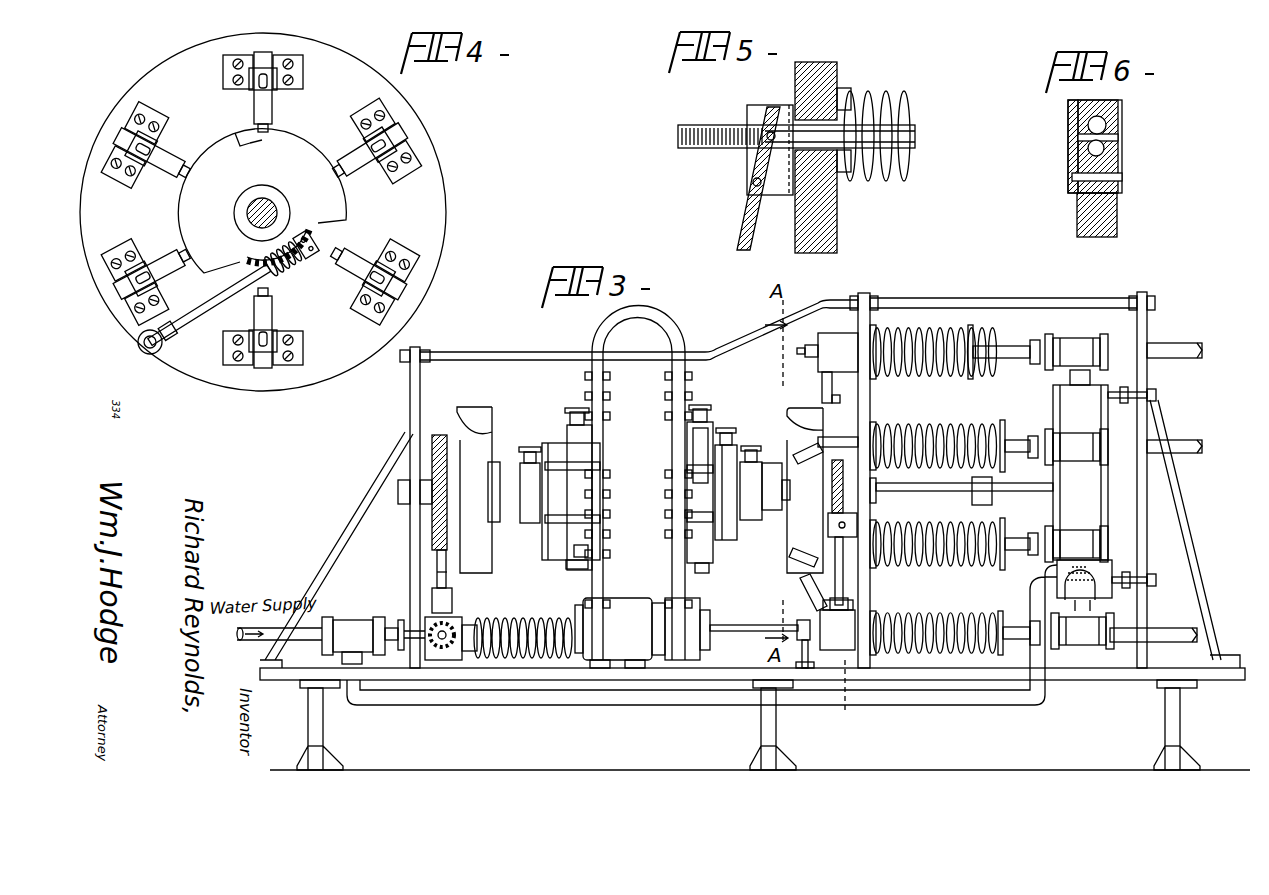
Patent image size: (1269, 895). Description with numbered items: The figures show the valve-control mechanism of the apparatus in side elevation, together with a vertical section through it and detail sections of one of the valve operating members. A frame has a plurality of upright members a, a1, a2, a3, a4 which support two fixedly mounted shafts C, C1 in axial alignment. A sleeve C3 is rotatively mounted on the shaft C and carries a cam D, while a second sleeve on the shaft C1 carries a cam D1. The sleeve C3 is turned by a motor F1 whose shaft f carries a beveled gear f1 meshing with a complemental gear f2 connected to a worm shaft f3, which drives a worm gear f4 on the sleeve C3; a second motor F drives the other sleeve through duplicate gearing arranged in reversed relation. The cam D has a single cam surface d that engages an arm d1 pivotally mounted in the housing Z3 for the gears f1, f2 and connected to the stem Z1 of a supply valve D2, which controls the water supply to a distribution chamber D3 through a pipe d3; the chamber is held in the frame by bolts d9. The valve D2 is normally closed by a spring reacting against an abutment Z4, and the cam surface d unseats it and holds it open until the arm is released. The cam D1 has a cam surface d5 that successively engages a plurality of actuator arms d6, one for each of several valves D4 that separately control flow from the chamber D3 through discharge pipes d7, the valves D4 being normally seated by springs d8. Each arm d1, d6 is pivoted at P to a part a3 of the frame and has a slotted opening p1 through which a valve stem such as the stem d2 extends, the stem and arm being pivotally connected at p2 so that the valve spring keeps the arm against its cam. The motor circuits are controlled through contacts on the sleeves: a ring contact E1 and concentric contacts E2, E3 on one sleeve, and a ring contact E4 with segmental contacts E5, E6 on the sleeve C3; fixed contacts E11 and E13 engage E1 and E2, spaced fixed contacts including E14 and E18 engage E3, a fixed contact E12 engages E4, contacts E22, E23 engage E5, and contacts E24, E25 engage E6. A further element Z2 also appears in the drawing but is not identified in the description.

In FIG. 3, the upright member a is at (410, 386).
In FIG. 3, the upright member a1 is at (597, 362).
In FIG. 3, the upright member a2 is at (680, 622).
In FIG. 5, the upright member a3 is at (822, 70).
In FIG. 3, the upright member a3 is at (872, 406).
In FIG. 3, the upright member a4 is at (1148, 300).
In FIG. 3, the cam surface d is at (460, 407).
In FIG. 3, the arm d1 is at (450, 615).
In FIG. 5, the valve stem d2 is at (905, 137).
In FIG. 6, the valve stem d2 is at (1080, 122).
In FIG. 3, the valve stem d2 is at (1000, 347).
In FIG. 3, the pipe d3 is at (620, 706).
In FIG. 4, the cam surface d5 is at (240, 136).
In FIG. 3, the cam surface d5 is at (803, 428).
In FIG. 4, the actuator arm d6 is at (320, 150).
In FIG. 5, the actuator arm d6 is at (742, 218).
In FIG. 6, the actuator arm d6 is at (1112, 213).
In FIG. 3, the actuator arm d6 is at (822, 446).
In FIG. 3, the discharge pipe d7 is at (1173, 345).
In FIG. 3, the spring d8 is at (922, 336).
In FIG. 3, the bolt d9 is at (1150, 395).
In FIG. 3, the cam D is at (460, 512).
In FIG. 4, the cam D1 is at (192, 198).
In FIG. 3, the cam D1 is at (820, 482).
In FIG. 3, the supply valve D2 is at (352, 620).
In FIG. 3, the distribution chamber D3 is at (1053, 414).
In FIG. 3, the valve D4 is at (1078, 344).
In FIG. 3, the shaft C is at (398, 491).
In FIG. 4, the shaft C1 is at (265, 200).
In FIG. 3, the shaft C1 is at (685, 499).
In FIG. 3, the sleeve C3 is at (500, 474).
In FIG. 3, the contact E1 is at (760, 525).
In FIG. 3, the contact E2 is at (733, 542).
In FIG. 3, the contact E3 is at (713, 442).
In FIG. 3, the contact E4 is at (528, 524).
In FIG. 3, the segmental contact E5 is at (567, 570).
In FIG. 3, the segmental contact E6 is at (588, 551).
In FIG. 3, the fixed contact E11 is at (753, 462).
In FIG. 3, the fixed contact E12 is at (540, 432).
In FIG. 3, the fixed contact E13 is at (736, 448).
In FIG. 3, the fixed contact E14 is at (706, 424).
In FIG. 3, the fixed contact E18 is at (730, 566).
In FIG. 3, the fixed contact E22 is at (600, 519).
In FIG. 3, the fixed contact E23 is at (600, 464).
In FIG. 3, the fixed contact E24 is at (575, 425).
In FIG. 3, the fixed contact E25 is at (588, 565).
In FIG. 4, the shaft f is at (136, 344).
In FIG. 3, the shaft f is at (577, 662).
In FIG. 4, the beveled gear f1 is at (143, 358).
In FIG. 3, the beveled gear f1 is at (443, 660).
In FIG. 4, the gear f2 is at (160, 358).
In FIG. 3, the gear f2 is at (850, 712).
In FIG. 4, the worm shaft f3 is at (302, 276).
In FIG. 3, the worm shaft f3 is at (435, 576).
In FIG. 4, the worm gear f4 is at (248, 232).
In FIG. 3, the worm gear f4 is at (432, 440).
In FIG. 3, the motor F is at (672, 660).
In FIG. 3, the motor F1 is at (642, 633).
In FIG. 3, the valve stem Z1 is at (401, 620).
In FIG. 3, the coupling Z2 is at (460, 632).
In FIG. 3, the housing Z3 is at (440, 660).
In FIG. 3, the abutment Z4 is at (522, 660).
In FIG. 4, the pivot P is at (405, 134).
In FIG. 5, the pivot P is at (745, 180).
In FIG. 6, the pivot P is at (1120, 177).
In FIG. 5, the slotted opening p1 is at (760, 112).
In FIG. 5, the pivotal connection p2 is at (775, 120).
In FIG. 6, the pivotal connection p2 is at (1110, 138).